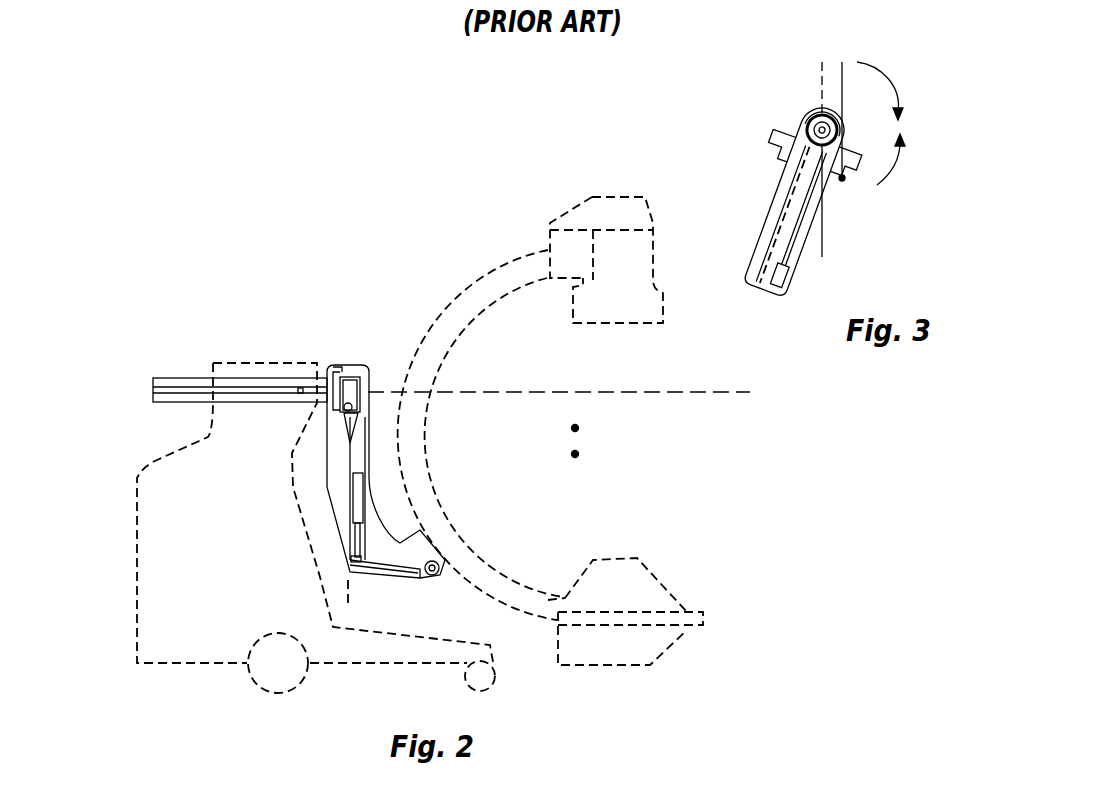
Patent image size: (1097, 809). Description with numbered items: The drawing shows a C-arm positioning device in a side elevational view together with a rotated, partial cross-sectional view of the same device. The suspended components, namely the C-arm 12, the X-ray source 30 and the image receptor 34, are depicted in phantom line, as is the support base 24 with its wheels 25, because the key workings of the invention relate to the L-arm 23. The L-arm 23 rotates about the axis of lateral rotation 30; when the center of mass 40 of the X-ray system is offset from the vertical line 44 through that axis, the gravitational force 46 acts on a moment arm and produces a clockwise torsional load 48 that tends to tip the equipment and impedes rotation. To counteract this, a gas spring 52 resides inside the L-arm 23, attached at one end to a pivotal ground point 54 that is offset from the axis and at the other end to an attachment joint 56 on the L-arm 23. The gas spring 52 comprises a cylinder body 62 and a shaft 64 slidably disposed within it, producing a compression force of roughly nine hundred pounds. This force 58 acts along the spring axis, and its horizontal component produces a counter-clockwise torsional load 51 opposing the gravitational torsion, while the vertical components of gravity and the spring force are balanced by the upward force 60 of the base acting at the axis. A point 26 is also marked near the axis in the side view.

In FIG. 2, the C-arm 12 is at (417, 360).
In FIG. 2, the L-arm 23 is at (325, 462).
In FIG. 3, the L-arm 23 is at (858, 290).
In FIG. 2, the support base 24 is at (160, 485).
In FIG. 2, the wheels 25 is at (265, 688).
In FIG. 2, the orbital axis point 26 is at (578, 428).
In FIG. 2, the axis of lateral rotation 30 is at (710, 392).
In FIG. 3, the axis of lateral rotation 30 is at (806, 122).
In FIG. 2, the image receptor 34 is at (652, 300).
In FIG. 2, the center of mass 40 is at (578, 454).
In FIG. 3, the vertical line 44 is at (820, 85).
In FIG. 3, the gravitational force 46 is at (843, 75).
In FIG. 3, the torsional load 48 is at (893, 78).
In FIG. 3, the counteracting torsional load 51 is at (877, 185).
In FIG. 2, the gas spring 52 is at (358, 443).
In FIG. 3, the gas spring 52 is at (880, 215).
In FIG. 2, the pivotal ground point 54 is at (360, 397).
In FIG. 3, the pivotal ground point 54 is at (828, 108).
In FIG. 3, the attachment joint 56 is at (882, 285).
In FIG. 3, the counteracting force 58 is at (872, 248).
In FIG. 3, the upward force 60 is at (820, 245).
In FIG. 2, the cylinder body 62 is at (347, 500).
In FIG. 2, the shaft 64 is at (340, 538).